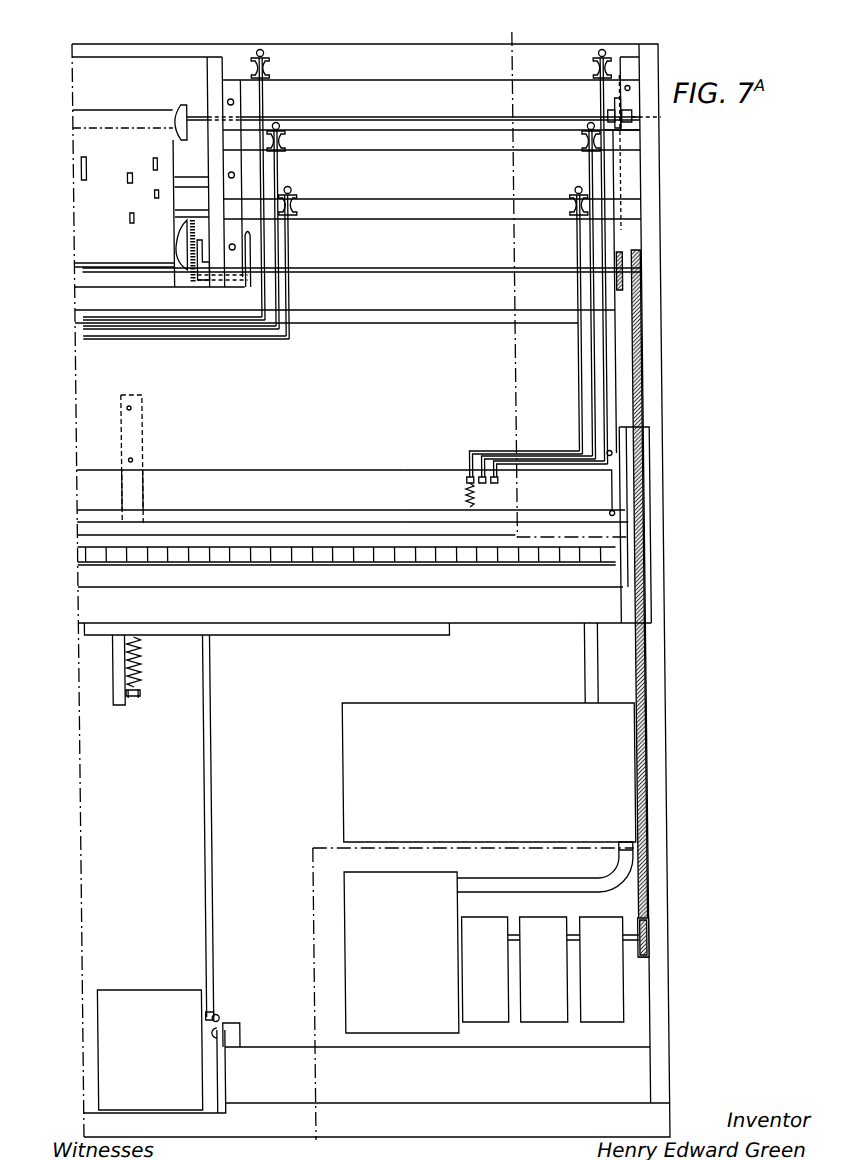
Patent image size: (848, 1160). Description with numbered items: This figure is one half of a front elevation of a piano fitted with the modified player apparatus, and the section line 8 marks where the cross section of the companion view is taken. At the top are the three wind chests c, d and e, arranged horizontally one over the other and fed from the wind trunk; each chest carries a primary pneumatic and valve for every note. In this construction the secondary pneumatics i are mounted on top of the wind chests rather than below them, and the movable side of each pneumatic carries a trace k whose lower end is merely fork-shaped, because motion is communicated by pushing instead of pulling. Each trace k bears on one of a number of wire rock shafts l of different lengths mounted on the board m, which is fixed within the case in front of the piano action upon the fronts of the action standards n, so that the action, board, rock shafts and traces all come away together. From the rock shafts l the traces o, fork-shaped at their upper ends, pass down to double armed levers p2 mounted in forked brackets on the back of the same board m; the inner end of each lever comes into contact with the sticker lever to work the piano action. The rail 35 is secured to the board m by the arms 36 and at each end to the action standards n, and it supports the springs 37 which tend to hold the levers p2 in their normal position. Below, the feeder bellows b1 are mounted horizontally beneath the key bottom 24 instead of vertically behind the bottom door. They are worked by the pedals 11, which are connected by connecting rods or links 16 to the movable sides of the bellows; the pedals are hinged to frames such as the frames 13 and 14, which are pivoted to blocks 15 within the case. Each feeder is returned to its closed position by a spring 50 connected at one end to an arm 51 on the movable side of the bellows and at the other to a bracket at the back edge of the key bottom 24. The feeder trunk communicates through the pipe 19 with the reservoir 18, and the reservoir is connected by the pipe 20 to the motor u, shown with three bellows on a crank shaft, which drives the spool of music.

The section line 8— 8 is at (469, 574).
The wind chest c is at (439, 100).
The wind chest d is at (432, 161).
The wind chest e is at (361, 249).
The secondary pneumatic i is at (272, 80).
The trace k is at (285, 294).
The rock shaft l is at (204, 326).
The board m is at (345, 359).
The trace o is at (463, 455).
The double armed lever p2 is at (490, 492).
The spring 37 is at (463, 494).
The action standard n is at (517, 496).
The rail 35 is at (291, 505).
The arm 36 is at (138, 486).
The key bottom 24 is at (365, 585).
The bellows or feeder b1 is at (315, 628).
The arm 51 is at (108, 680).
The spring 50 is at (134, 666).
The connecting rod or link 16 is at (209, 796).
The pipe 19 is at (578, 670).
The reservoir 18 is at (489, 772).
The pipe 20 is at (538, 873).
The motor u is at (551, 969).
The pedal 11 is at (149, 1050).
The block 15 is at (221, 1027).
The frame 14 is at (209, 1073).
The frame 13 is at (154, 1092).